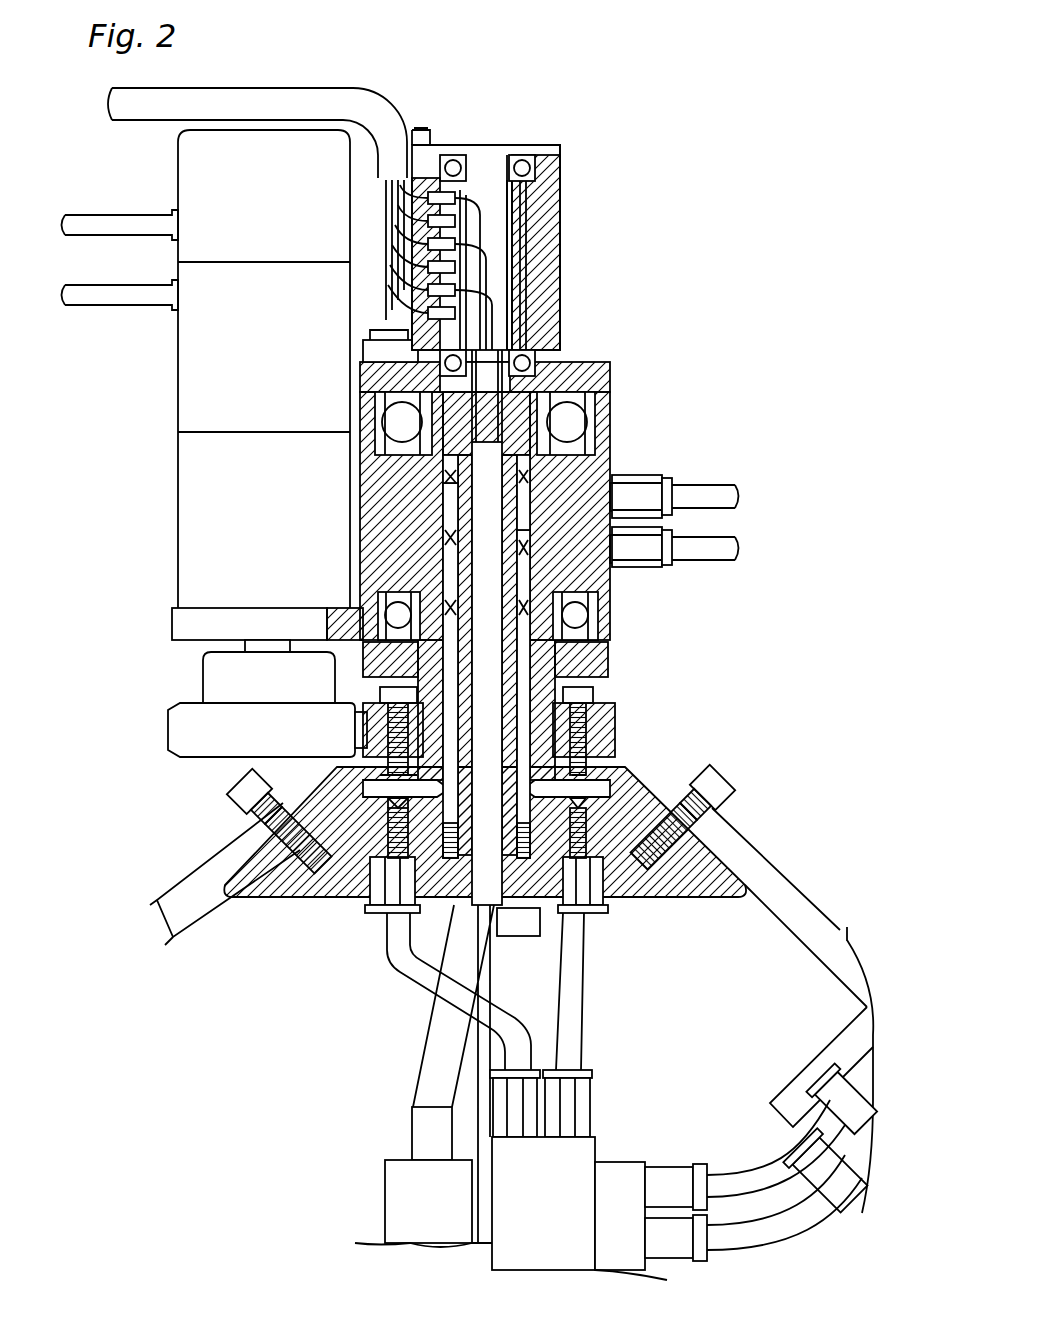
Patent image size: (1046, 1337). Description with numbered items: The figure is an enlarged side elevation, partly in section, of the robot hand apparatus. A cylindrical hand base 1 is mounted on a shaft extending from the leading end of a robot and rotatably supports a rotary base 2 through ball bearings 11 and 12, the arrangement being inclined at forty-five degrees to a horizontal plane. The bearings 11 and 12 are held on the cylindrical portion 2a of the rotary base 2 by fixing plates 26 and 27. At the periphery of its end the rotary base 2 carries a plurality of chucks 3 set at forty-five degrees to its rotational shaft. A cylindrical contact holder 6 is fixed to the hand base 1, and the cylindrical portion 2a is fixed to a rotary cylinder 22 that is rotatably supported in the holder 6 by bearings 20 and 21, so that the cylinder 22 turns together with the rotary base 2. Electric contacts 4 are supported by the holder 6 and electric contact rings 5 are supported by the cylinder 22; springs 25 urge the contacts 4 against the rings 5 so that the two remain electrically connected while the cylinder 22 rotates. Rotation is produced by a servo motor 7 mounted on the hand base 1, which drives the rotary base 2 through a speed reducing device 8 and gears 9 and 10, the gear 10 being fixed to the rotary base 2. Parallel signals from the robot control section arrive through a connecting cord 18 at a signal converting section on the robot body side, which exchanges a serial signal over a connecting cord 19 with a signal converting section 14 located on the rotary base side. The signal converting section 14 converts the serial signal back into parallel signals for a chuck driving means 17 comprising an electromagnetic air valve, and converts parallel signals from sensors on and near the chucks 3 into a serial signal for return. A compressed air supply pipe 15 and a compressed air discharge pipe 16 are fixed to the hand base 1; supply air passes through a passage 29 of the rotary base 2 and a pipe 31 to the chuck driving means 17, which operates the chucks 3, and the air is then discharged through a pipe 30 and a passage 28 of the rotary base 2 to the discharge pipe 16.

The hand base 1 is at (618, 436).
The rotary base 2 is at (300, 875).
The cylindrical portion 2a is at (545, 470).
The chucks 3 is at (800, 1085).
The electric contacts 4 is at (470, 192).
The electric contact rings 5 is at (490, 200).
The contact holder 6 is at (568, 178).
The servo motor 7 is at (205, 392).
The speed reducing device 8 is at (205, 490).
The gear 9 is at (168, 724).
The gear 10 is at (600, 700).
The ball bearing 11 is at (592, 612).
The ball bearing 12 is at (592, 408).
The signal converting section 14 is at (395, 1208).
The compressed air supply pipe 15 is at (740, 496).
The compressed air discharge pipe 16 is at (740, 548).
The chuck driving means 17 is at (492, 1162).
The connecting cord 18 is at (266, 102).
The connecting cord 19 is at (560, 750).
The bearing 20 is at (530, 160).
The bearing 21 is at (536, 358).
The rotary cylinder 22 is at (525, 232).
The springs 25 is at (422, 190).
The fixing plate 26 is at (372, 378).
The fixing plate 27 is at (360, 662).
The passage 28 is at (570, 668).
The passage 29 is at (335, 624).
The pipe 30 is at (570, 988).
The pipe 31 is at (398, 962).